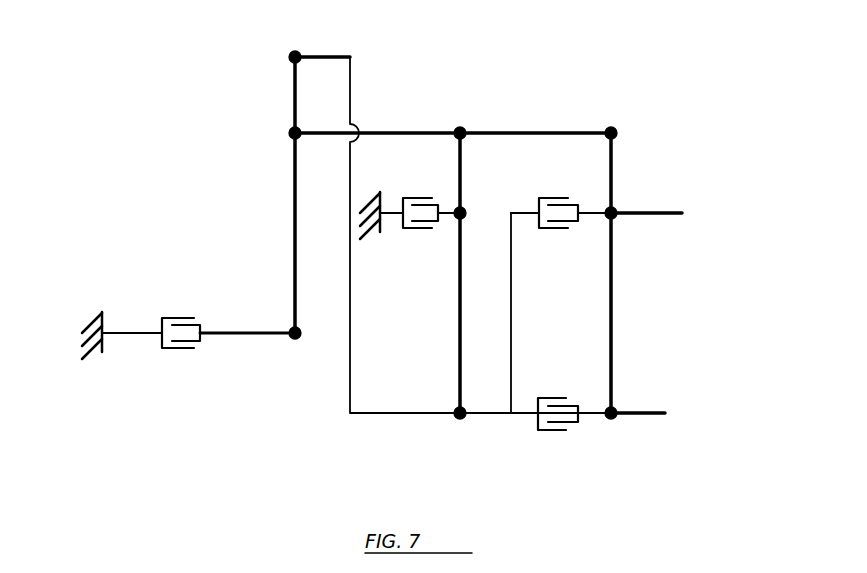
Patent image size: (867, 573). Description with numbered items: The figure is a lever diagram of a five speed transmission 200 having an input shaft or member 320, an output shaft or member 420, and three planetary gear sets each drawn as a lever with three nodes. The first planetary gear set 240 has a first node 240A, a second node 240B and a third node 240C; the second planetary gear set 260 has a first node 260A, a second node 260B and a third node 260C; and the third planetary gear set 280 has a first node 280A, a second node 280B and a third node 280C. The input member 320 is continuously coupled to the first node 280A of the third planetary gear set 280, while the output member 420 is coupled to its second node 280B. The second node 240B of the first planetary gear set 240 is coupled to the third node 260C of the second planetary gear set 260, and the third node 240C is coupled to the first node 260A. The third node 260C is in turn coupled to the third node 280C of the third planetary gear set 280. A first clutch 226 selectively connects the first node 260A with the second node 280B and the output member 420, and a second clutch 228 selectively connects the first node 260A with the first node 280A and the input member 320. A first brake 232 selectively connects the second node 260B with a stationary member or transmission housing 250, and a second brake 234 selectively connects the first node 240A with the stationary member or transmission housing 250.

The transmission 200 is at (558, 72).
The first planetary gear set 240 is at (296, 365).
The first node of the first planetary gear set 240A is at (293, 342).
The second node of the first planetary gear set 240B is at (290, 134).
The third node of the first planetary gear set 240C is at (290, 59).
The second planetary gear set 260 is at (460, 448).
The first node of the second planetary gear set 260A is at (459, 420).
The second node of the second planetary gear set 260B is at (465, 209).
The third node of the second planetary gear set 260C is at (461, 128).
The third planetary gear set 280 is at (615, 120).
The first node of the third planetary gear set 280A is at (612, 420).
The second node of the third planetary gear set 280B is at (614, 210).
The third node of the third planetary gear set 280C is at (615, 134).
The stationary member or transmission housing 250 is at (91, 314).
The first brake 232 is at (415, 230).
The second brake 234 is at (175, 350).
The first clutch 226 is at (558, 230).
The second clutch 228 is at (558, 432).
The output shaft or member 420 is at (682, 212).
The input shaft or member 320 is at (668, 412).